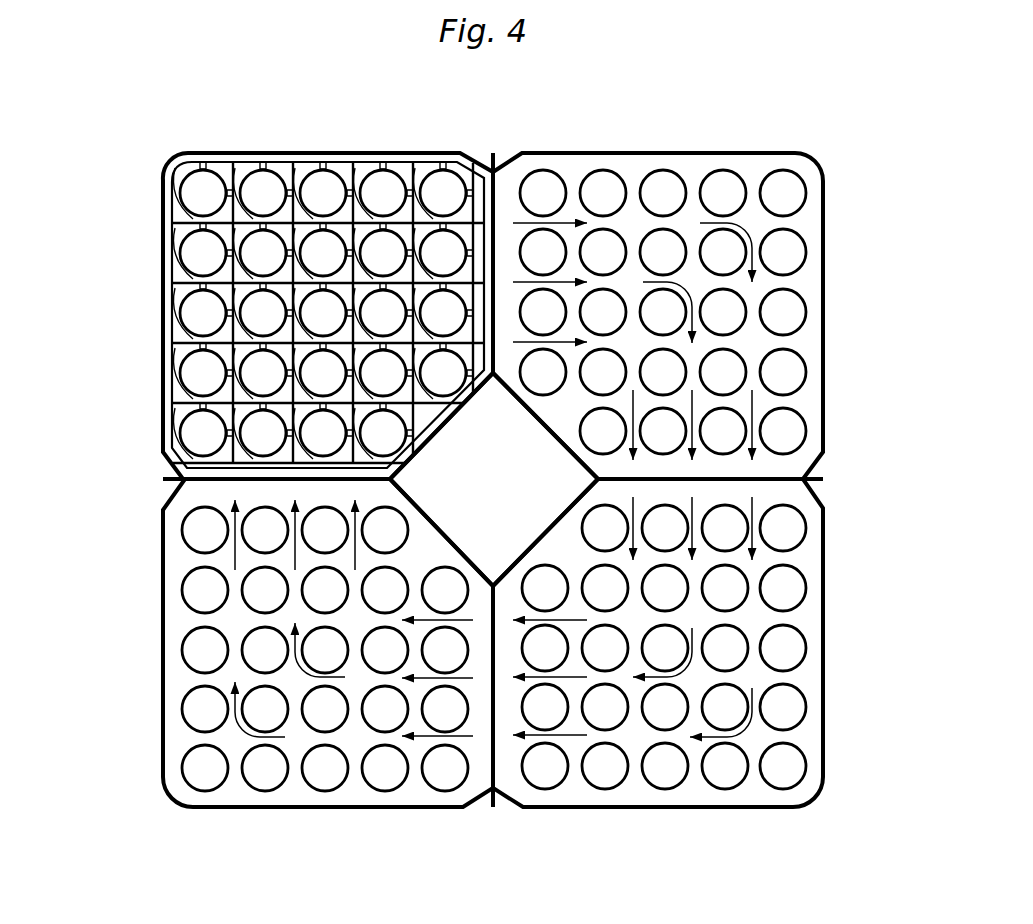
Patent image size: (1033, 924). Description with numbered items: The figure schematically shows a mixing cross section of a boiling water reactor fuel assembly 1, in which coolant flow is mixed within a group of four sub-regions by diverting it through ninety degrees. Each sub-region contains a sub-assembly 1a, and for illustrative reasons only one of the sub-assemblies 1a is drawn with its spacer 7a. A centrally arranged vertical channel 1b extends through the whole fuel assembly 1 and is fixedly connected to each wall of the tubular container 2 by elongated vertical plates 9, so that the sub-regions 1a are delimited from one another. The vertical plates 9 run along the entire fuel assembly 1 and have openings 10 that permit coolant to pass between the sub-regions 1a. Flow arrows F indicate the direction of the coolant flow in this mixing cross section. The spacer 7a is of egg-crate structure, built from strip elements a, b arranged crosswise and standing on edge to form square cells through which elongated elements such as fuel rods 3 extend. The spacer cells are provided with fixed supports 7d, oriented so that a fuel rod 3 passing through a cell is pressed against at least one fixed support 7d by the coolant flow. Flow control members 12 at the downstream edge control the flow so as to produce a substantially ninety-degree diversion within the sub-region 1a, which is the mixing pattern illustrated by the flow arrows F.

The fuel assembly 1 is at (176, 126).
The sub-assembly 1a is at (222, 178).
The vertical channel 1b is at (437, 437).
The tubular container 2 is at (826, 483).
The fuel rod 3 is at (783, 645).
The spacer 7a is at (175, 410).
The fixed support 7d is at (405, 185).
The vertical plate 9 is at (497, 190).
The opening 10 is at (500, 280).
The flow control member 12 is at (178, 385).
The strip element a is at (178, 292).
The strip element b is at (282, 160).
The flow arrow F is at (760, 686).